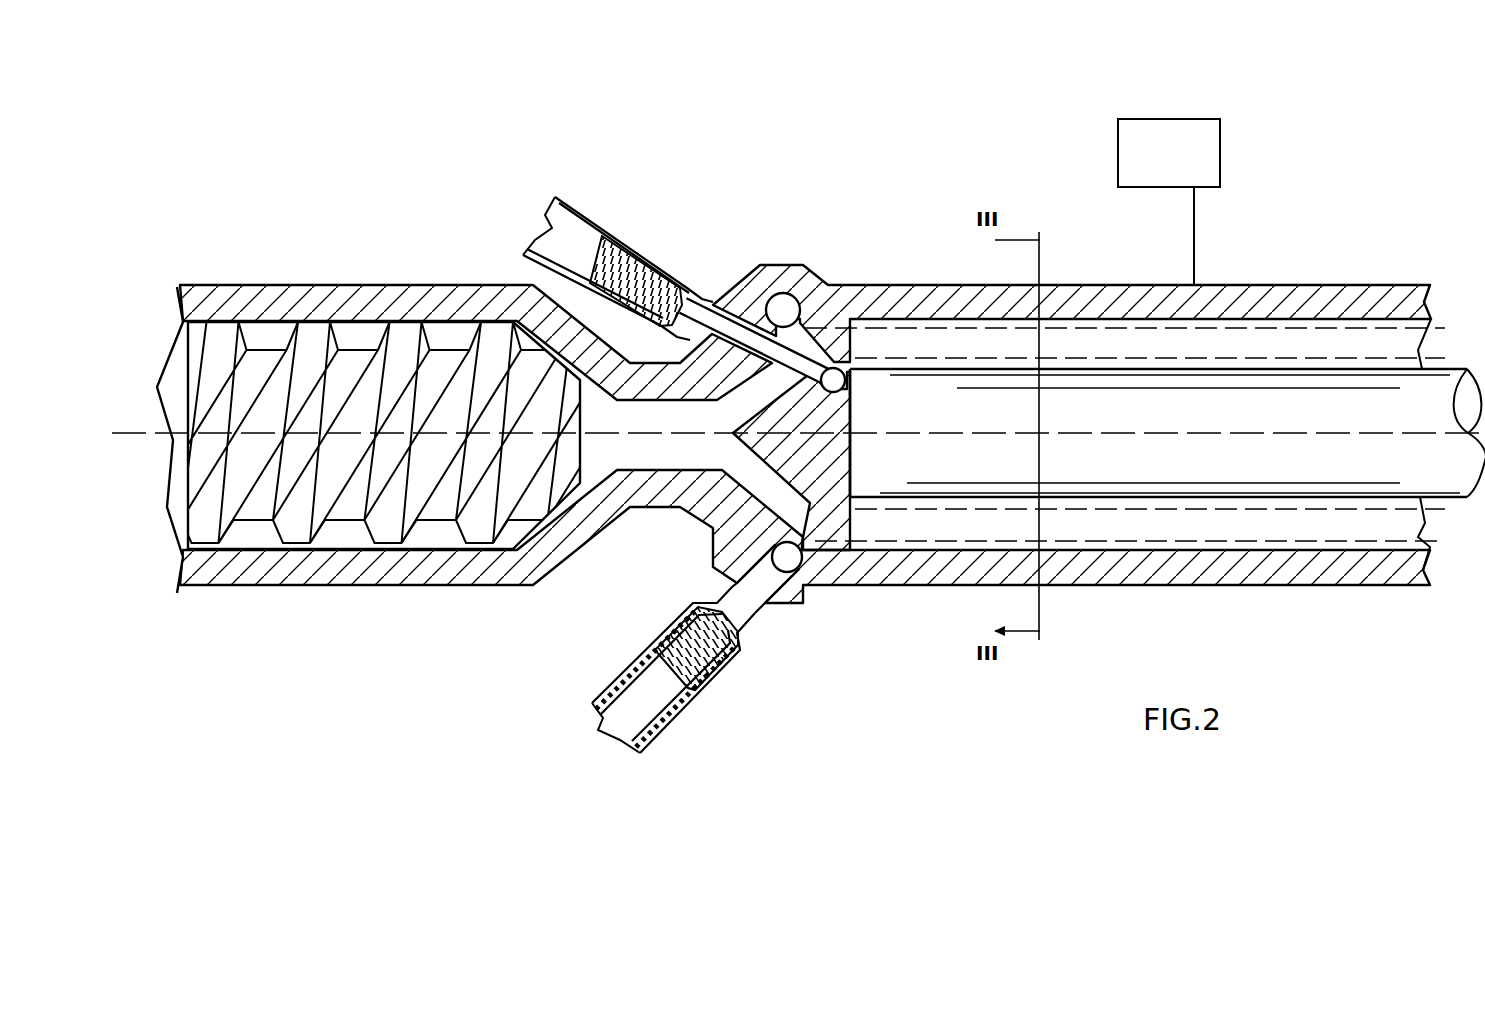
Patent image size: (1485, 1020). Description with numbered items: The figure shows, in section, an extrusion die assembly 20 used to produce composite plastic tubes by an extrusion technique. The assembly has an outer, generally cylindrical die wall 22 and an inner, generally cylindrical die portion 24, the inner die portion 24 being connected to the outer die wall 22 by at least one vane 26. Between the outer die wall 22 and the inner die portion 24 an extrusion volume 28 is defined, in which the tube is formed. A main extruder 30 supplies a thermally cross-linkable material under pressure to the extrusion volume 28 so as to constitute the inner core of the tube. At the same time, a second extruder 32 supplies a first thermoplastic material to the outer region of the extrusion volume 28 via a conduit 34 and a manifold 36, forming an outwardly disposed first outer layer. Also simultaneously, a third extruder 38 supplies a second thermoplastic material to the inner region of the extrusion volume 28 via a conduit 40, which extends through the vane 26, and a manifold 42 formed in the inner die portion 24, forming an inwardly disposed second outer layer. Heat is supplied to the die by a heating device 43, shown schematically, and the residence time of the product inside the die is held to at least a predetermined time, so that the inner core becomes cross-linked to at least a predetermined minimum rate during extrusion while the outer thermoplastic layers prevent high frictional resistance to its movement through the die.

The extrusion die assembly 20 is at (1266, 190).
The outer die wall 22 is at (1087, 297).
The inner die portion 24 is at (1210, 393).
The vane 26 is at (808, 355).
The extrusion volume 28 is at (886, 340).
The main extruder 30 is at (455, 333).
The second extruder 32 is at (703, 690).
The conduit 34 is at (750, 597).
The manifold 36 is at (834, 495).
The third extruder 38 is at (655, 248).
The conduit 40 is at (740, 325).
The manifold 42 is at (857, 357).
The heating device 43 is at (1118, 147).